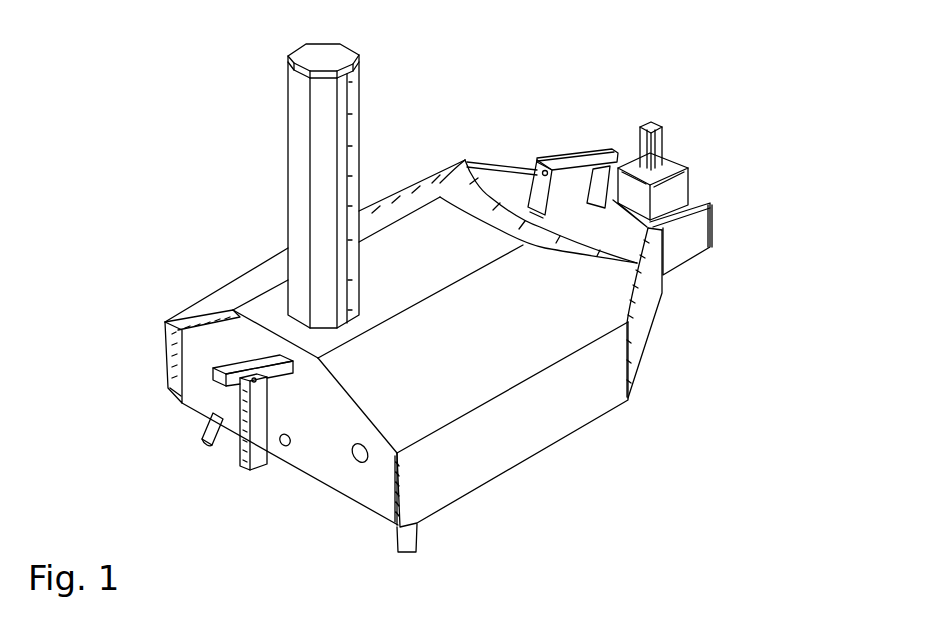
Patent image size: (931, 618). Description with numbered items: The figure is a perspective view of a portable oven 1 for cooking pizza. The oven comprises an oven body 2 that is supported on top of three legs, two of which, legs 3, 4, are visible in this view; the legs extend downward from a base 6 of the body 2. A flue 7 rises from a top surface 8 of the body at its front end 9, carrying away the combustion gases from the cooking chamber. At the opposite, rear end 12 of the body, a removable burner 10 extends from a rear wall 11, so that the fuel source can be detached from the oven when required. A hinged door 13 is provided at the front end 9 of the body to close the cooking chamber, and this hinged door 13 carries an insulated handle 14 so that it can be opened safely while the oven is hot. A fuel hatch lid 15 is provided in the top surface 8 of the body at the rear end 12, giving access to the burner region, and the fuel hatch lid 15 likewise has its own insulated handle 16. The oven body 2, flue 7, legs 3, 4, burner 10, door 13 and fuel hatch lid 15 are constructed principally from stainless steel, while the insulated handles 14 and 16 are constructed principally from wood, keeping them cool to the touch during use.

The portable oven 1 is at (710, 465).
The oven body 2 is at (653, 333).
The leg 3 is at (203, 433).
The leg 4 is at (417, 540).
The base 6 is at (524, 474).
The flue 7 is at (285, 130).
The top surface 8 is at (423, 237).
The front end 9 is at (134, 327).
The removable burner 10 is at (708, 207).
The rear wall 11 is at (665, 273).
The rear end 12 is at (585, 125).
The hinged door 13 is at (350, 480).
The insulated handle 14 is at (243, 466).
The fuel hatch lid 15 is at (498, 185).
The insulated handle 16 is at (597, 150).